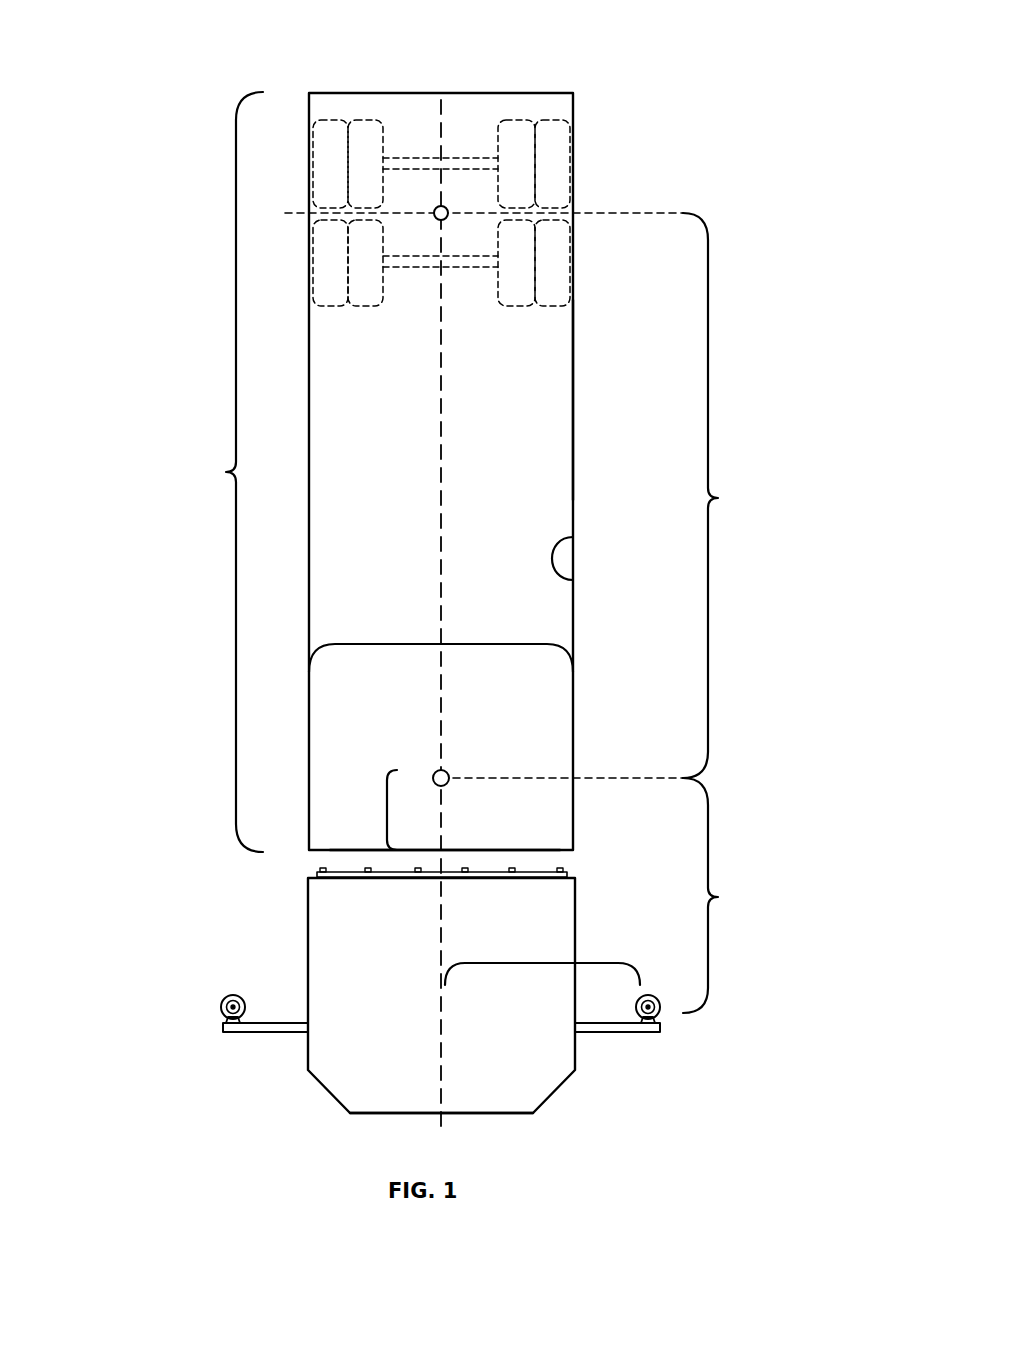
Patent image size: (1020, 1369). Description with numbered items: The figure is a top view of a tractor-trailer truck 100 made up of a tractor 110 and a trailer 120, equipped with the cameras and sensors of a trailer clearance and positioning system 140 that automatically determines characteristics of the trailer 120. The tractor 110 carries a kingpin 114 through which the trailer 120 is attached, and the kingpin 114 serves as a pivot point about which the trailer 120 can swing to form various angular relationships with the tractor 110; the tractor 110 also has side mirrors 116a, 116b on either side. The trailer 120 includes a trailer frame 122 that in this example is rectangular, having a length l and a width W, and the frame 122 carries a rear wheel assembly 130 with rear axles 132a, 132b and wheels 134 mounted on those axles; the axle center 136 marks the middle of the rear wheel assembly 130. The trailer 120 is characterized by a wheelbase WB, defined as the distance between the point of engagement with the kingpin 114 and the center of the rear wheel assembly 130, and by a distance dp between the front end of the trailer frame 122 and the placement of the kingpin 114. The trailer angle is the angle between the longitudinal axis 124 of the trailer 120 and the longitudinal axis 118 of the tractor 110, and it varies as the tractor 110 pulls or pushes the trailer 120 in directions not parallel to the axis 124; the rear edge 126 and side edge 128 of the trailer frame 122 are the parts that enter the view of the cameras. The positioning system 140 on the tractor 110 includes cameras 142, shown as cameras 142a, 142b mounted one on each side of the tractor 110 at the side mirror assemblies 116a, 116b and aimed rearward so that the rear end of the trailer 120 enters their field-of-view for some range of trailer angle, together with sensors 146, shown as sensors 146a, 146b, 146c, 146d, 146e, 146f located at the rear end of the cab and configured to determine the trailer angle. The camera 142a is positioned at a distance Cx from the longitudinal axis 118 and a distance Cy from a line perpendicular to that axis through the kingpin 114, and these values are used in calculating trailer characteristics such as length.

The tractor-trailer truck 100 is at (678, 90).
The tractor 110 is at (549, 1097).
The kingpin 114 is at (447, 769).
The side mirror 116a is at (630, 1033).
The side mirror 116b is at (255, 1033).
The longitudinal axis of the tractor 118 is at (441, 1033).
The trailer 120 is at (573, 477).
The trailer frame 122 is at (573, 407).
The longitudinal axis of the trailer 124 is at (441, 417).
The rear edge 126 is at (452, 850).
The side edge 128 is at (573, 578).
The rear wheel assembly 130 is at (475, 198).
The rear axle 132a is at (469, 157).
The rear axle 132b is at (468, 268).
The wheels 134 is at (519, 120).
The front axle center point 136 is at (436, 207).
The trailer clearance and positioning system 140 is at (676, 839).
The cameras 142 is at (397, 973).
The camera 142a is at (648, 995).
The camera 142b is at (233, 995).
The sensors 146 is at (420, 869).
The sensor 146a is at (418, 869).
The sensor 146b is at (368, 878).
The sensor 146c is at (322, 870).
The sensor 146d is at (465, 869).
The sensor 146e is at (512, 877).
The sensor 146f is at (562, 869).
The length l is at (233, 472).
The width W is at (432, 644).
The wheelbase WB is at (720, 495).
The camera lateral distance Cx is at (543, 963).
The camera longitudinal distance Cy is at (715, 895).
The kingpin placement distance dp is at (387, 813).